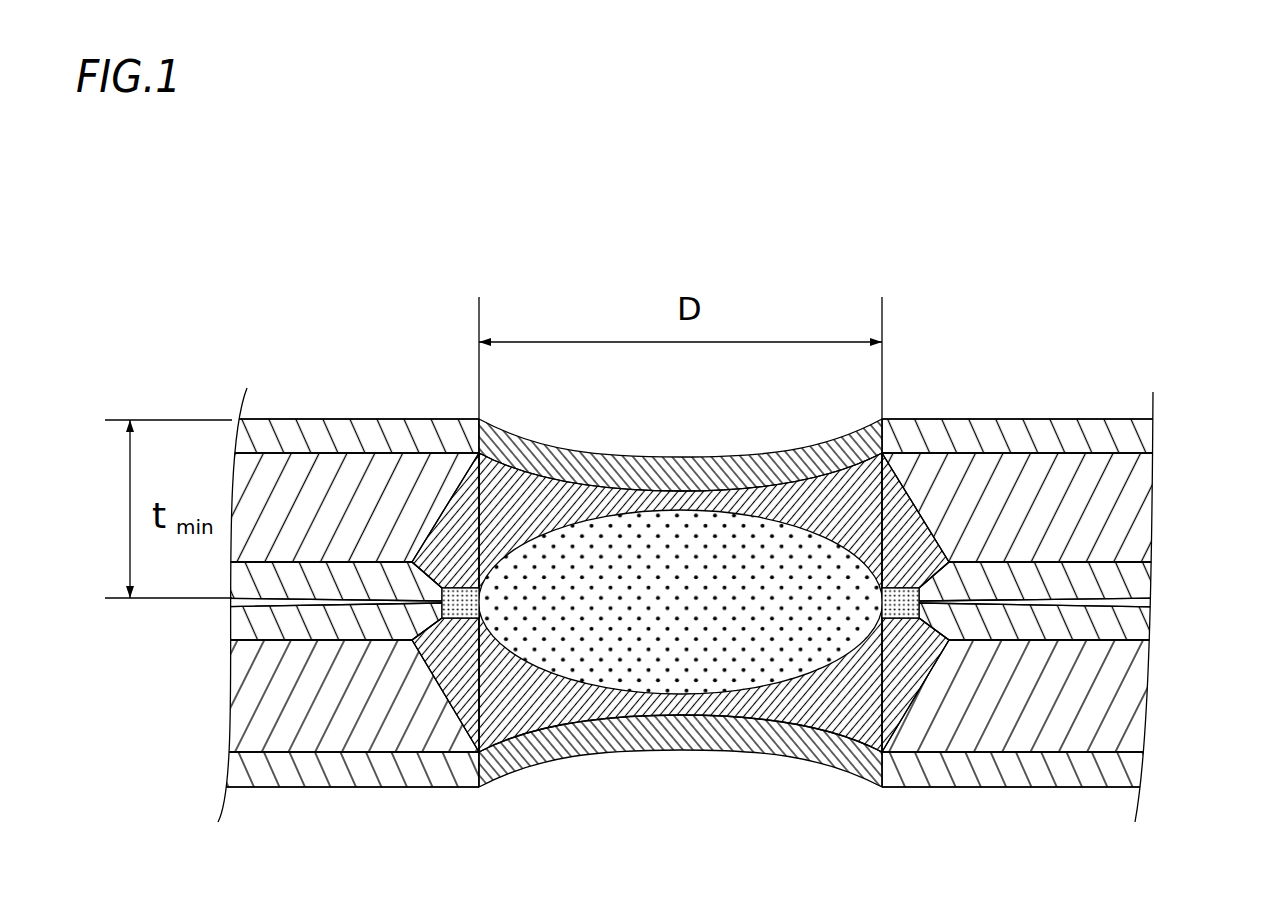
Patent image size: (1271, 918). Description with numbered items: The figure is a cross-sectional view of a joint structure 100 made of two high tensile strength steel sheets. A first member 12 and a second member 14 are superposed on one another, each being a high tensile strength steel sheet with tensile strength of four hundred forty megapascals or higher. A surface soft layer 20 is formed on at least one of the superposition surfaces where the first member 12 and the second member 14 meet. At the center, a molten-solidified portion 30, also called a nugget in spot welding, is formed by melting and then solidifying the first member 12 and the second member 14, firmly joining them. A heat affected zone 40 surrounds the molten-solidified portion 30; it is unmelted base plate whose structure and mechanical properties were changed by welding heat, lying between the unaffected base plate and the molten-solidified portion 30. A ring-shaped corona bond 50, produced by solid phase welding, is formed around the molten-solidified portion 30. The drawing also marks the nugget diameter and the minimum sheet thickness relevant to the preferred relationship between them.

The joint structure 100 is at (457, 333).
The first member 12 is at (1133, 693).
The second member 14 is at (1127, 503).
The surface soft layer 20 is at (1133, 433).
The molten-solidified portion 30 is at (680, 552).
The heat affected zone 40 is at (866, 508).
The corona bond 50 is at (890, 617).